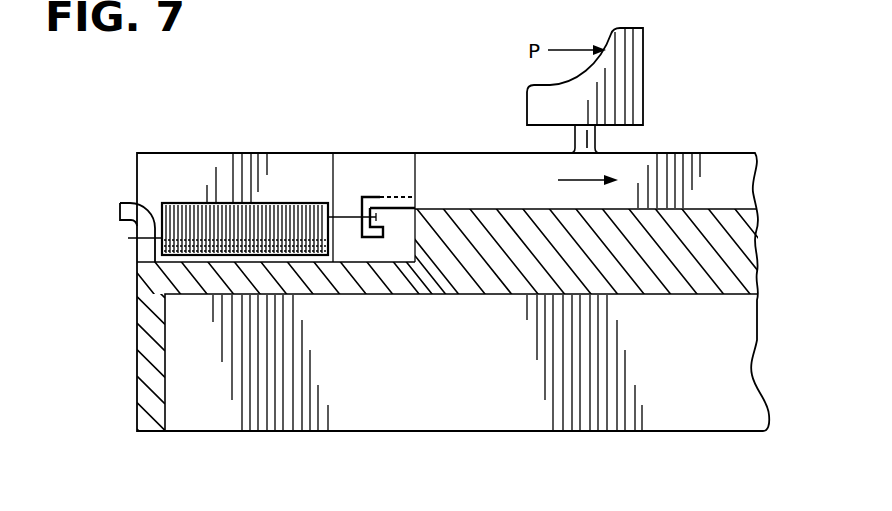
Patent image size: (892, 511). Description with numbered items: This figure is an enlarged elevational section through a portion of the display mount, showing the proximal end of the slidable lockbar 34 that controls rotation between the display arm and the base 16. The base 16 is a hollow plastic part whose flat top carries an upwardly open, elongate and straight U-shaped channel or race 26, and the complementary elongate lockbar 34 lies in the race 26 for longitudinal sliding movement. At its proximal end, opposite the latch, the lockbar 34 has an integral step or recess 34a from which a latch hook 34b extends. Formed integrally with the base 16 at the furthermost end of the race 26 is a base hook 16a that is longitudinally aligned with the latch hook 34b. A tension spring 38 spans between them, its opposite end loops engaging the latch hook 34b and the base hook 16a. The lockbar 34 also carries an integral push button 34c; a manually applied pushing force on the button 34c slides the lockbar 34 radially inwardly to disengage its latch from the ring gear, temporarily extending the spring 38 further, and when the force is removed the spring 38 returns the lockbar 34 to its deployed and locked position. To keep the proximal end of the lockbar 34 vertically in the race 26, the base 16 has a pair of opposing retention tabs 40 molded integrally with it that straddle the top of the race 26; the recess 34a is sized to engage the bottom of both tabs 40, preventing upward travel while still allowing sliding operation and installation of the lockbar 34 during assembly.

The base 16 is at (440, 438).
The base hook 16a is at (120, 207).
The race 26 is at (169, 168).
The lockbar 34 is at (722, 165).
The recess 34a is at (415, 197).
The latch hook 34b is at (380, 239).
The push button 34c is at (643, 48).
The spring 38 is at (302, 203).
The retention tabs 40 is at (373, 175).